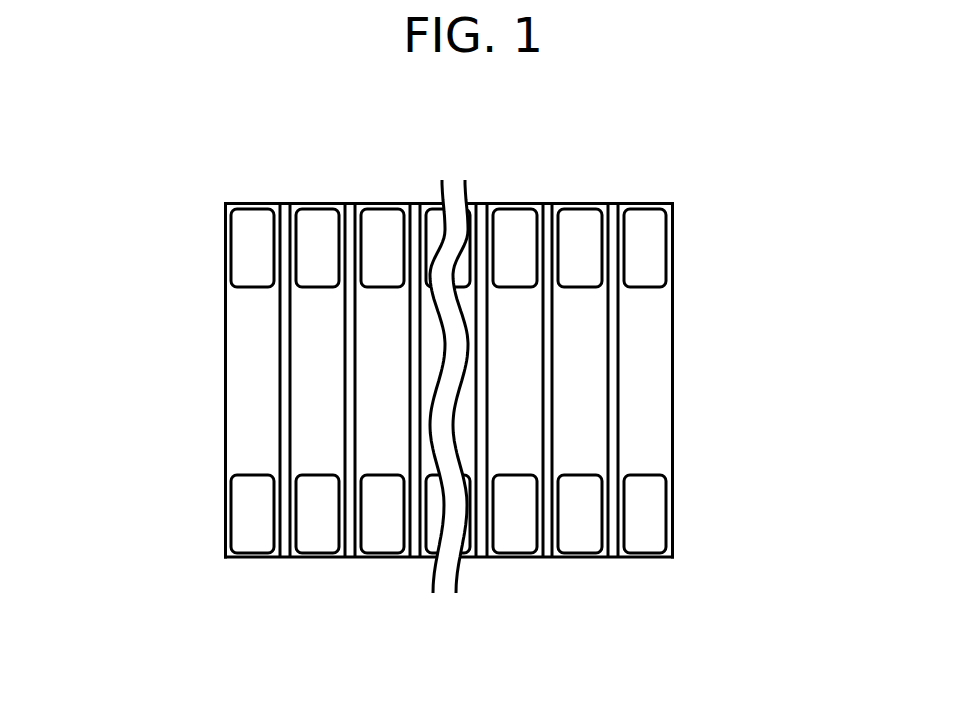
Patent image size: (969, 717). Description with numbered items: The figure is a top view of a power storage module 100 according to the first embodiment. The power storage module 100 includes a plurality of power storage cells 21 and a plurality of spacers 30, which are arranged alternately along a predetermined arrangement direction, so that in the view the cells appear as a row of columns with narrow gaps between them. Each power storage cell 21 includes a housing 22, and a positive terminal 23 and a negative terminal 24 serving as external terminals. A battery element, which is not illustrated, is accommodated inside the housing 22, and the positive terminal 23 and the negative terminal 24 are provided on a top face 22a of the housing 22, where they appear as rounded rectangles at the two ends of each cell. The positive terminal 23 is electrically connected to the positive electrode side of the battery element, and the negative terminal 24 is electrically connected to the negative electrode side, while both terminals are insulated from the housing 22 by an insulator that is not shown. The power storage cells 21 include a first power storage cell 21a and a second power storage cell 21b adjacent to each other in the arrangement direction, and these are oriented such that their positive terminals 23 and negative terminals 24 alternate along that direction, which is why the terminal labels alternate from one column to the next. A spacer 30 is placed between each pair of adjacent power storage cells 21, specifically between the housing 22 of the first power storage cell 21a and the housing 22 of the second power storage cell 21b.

The power storage module 100 is at (831, 166).
The power storage cell 21 is at (446, 381).
The first power storage cell 21a is at (380, 388).
The second power storage cell 21b is at (315, 430).
The housing 22 is at (673, 282).
The top face 22a is at (650, 333).
The positive terminal 23 is at (248, 203).
The negative terminal 24 is at (314, 203).
The spacer 30 is at (283, 560).